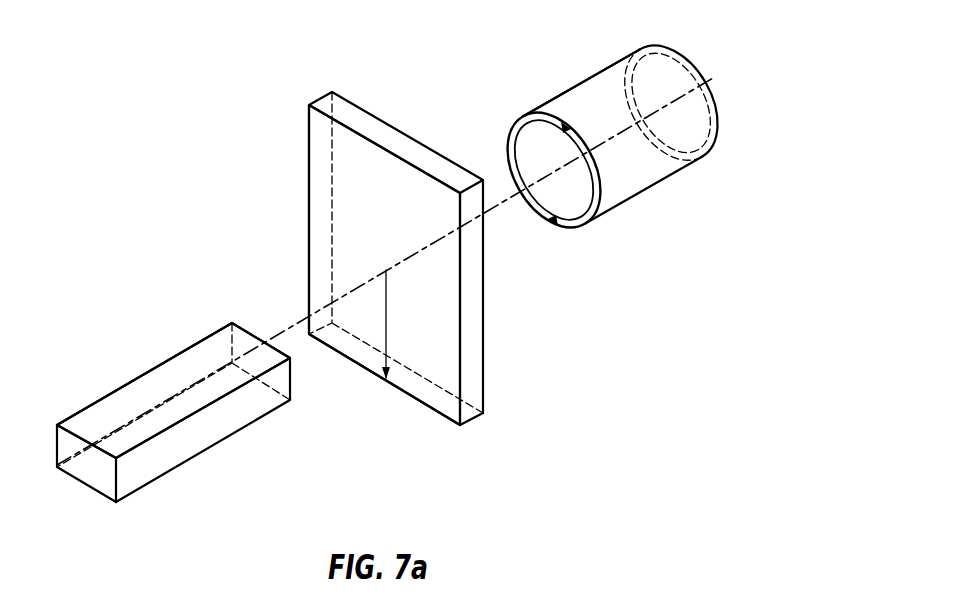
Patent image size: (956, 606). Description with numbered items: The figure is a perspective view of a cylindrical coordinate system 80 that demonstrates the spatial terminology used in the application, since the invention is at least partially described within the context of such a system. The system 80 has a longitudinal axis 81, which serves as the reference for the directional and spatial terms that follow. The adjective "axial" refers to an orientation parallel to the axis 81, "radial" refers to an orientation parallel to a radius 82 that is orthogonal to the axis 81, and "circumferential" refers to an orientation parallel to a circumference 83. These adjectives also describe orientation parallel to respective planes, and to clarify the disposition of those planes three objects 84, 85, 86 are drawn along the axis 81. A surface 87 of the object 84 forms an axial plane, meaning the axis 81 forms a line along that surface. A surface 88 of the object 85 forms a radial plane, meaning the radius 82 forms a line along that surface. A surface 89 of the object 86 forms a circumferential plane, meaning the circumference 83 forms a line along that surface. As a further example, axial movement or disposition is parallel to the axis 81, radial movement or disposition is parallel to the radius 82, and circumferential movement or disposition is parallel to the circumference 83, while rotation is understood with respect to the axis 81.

The cylindrical coordinate system 80 is at (267, 140).
The longitudinal axis 81 is at (703, 88).
The radius 82 is at (386, 318).
The circumference 83 is at (508, 132).
The object 84 is at (142, 492).
The object 85 is at (490, 415).
The object 86 is at (640, 210).
The surface 87 is at (135, 395).
The surface 88 is at (322, 220).
The surface 89 is at (582, 79).